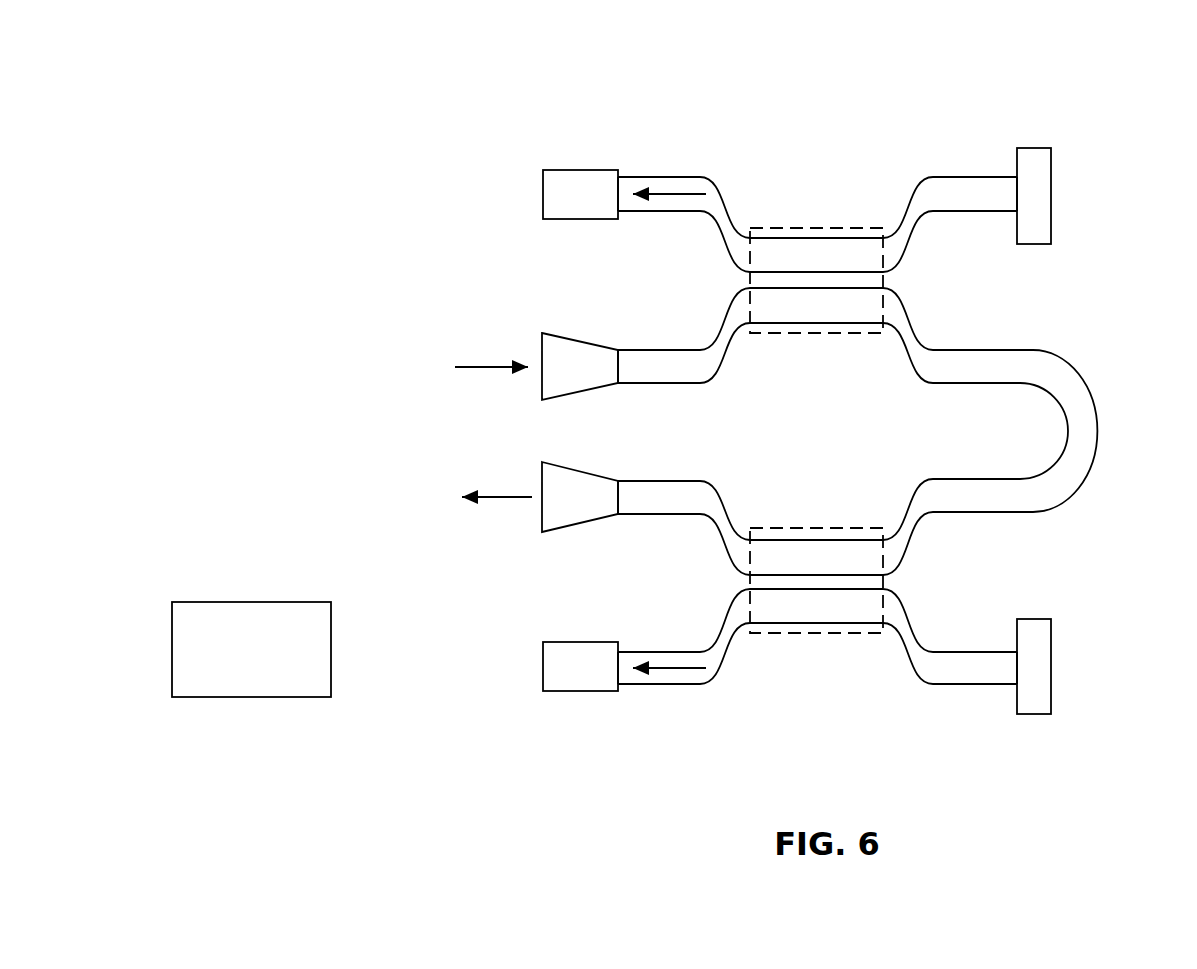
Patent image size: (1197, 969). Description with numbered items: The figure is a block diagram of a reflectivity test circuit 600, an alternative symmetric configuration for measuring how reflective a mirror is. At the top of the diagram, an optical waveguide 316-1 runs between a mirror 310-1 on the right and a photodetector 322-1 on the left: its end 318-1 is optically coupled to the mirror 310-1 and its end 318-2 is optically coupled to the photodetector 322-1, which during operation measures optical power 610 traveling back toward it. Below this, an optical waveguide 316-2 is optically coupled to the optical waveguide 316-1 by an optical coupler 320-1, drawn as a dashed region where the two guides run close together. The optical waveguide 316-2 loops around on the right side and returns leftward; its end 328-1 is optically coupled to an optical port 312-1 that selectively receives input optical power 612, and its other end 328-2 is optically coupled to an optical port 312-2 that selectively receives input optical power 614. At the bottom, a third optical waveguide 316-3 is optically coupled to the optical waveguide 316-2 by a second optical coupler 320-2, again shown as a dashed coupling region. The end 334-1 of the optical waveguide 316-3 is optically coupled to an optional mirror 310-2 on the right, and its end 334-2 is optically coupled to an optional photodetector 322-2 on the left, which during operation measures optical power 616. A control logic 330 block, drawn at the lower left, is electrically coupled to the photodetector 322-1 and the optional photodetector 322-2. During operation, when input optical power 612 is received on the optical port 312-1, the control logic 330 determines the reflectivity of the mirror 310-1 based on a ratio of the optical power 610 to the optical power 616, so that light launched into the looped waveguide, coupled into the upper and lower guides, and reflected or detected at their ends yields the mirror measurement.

The reflectivity test circuit 600 is at (303, 112).
The mirror 310-1 is at (1033, 190).
The optional mirror 310-2 is at (1033, 672).
The optical port 312-1 is at (573, 357).
The optical port 312-2 is at (573, 509).
The optical waveguide 316-1 is at (715, 200).
The optical waveguide 316-2 is at (1007, 370).
The optical waveguide 316-3 is at (715, 663).
The end 318-1 is at (1017, 142).
The end 318-2 is at (618, 163).
The optical coupler 320-1 is at (885, 280).
The optical coupler 320-2 is at (885, 585).
The photodetector 322-1 is at (565, 195).
The optional photodetector 322-2 is at (565, 658).
The end 328-1 is at (618, 345).
The end 328-2 is at (618, 475).
The control logic 330 is at (251, 649).
The end 334-1 is at (1017, 720).
The end 334-2 is at (618, 695).
The optical power 610 is at (682, 192).
The input optical power 612 is at (488, 367).
The input optical power 614 is at (480, 497).
The optical power 616 is at (680, 668).